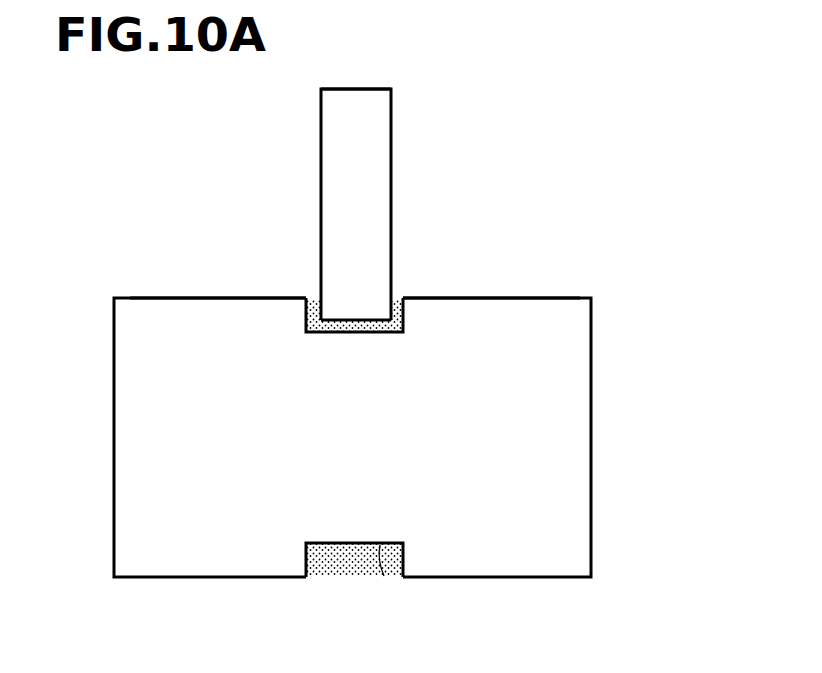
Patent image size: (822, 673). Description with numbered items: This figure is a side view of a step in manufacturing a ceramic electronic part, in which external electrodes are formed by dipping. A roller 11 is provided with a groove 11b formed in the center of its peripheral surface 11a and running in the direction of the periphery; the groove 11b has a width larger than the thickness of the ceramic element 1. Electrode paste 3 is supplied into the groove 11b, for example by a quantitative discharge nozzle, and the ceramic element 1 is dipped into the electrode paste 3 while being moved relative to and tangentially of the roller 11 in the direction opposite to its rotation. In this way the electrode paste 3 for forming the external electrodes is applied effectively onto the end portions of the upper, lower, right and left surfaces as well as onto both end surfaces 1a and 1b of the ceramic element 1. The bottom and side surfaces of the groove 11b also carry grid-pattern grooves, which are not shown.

The ceramic element 1 is at (392, 122).
The end surface 1a is at (350, 332).
The end surface 1b is at (352, 88).
The electrode paste 3 is at (313, 300).
The roller 11 is at (596, 342).
The peripheral surface 11a is at (548, 298).
The groove 11b is at (397, 300).